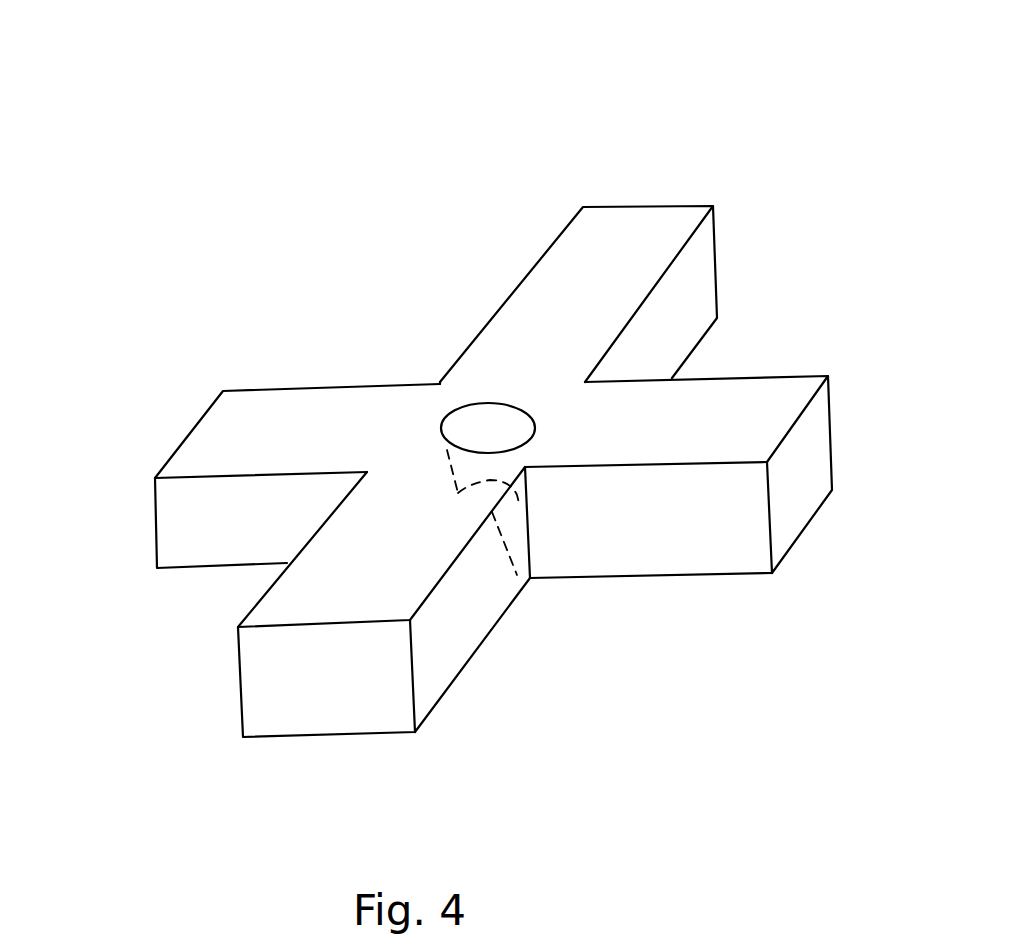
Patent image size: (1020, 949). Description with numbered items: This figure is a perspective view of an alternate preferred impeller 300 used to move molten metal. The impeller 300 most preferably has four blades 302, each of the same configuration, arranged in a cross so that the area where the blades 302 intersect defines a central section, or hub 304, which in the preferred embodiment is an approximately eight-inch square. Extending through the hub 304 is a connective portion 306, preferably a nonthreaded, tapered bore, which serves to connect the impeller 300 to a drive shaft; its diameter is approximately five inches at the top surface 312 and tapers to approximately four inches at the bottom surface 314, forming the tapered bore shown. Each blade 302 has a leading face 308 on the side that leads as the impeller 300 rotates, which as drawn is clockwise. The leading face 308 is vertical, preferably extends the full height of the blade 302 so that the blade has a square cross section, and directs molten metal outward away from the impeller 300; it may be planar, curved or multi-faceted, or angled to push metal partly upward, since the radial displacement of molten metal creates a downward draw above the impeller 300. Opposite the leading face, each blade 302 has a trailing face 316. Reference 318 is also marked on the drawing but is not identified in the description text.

The impeller 300 is at (764, 96).
The blade 302 is at (606, 228).
The hub 304 is at (457, 388).
The connective portion 306 is at (497, 433).
The leading face 308 is at (693, 302).
The top surface 312 is at (680, 230).
The bottom surface 314 is at (832, 493).
The trailing face 316 is at (435, 670).
The inner edge 318 is at (297, 590).